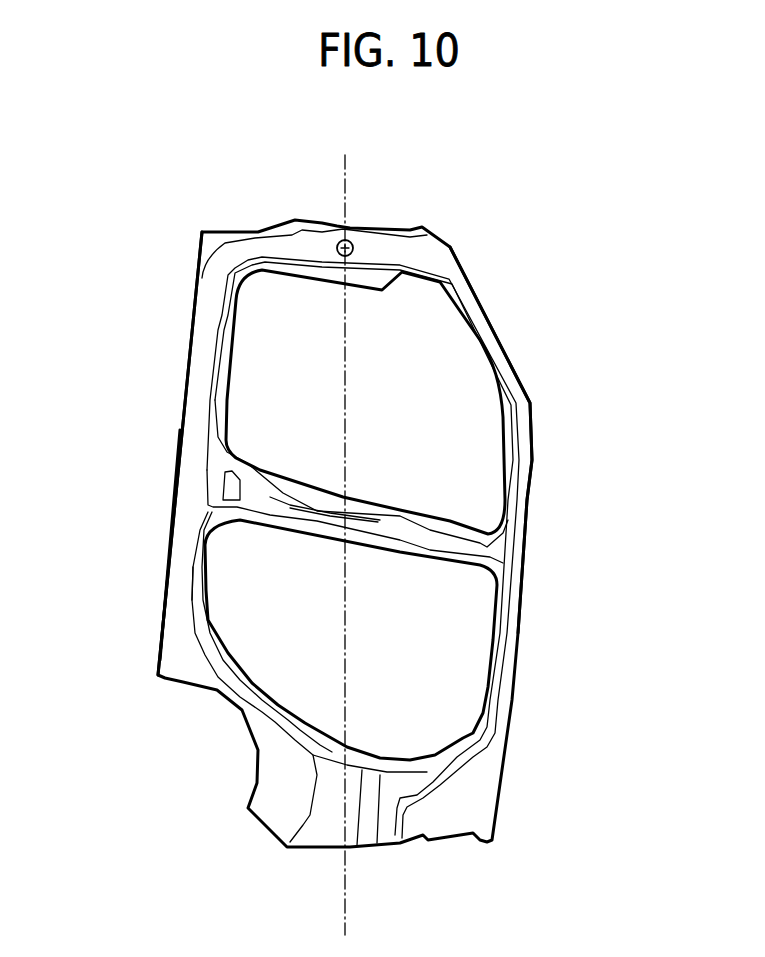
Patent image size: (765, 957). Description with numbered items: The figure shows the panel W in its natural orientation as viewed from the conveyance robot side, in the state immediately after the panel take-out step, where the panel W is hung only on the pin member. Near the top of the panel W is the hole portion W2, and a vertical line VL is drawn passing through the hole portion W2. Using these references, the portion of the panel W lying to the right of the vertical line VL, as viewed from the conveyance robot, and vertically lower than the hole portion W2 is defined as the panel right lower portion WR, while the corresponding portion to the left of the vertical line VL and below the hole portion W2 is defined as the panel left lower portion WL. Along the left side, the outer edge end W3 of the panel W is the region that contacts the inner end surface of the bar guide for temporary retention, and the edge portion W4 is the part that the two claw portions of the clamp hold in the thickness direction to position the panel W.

The panel W is at (450, 247).
The hole portion W2 is at (345, 240).
The outer edge end W3 is at (165, 578).
The edge portion W4 is at (180, 590).
The panel left lower portion WL is at (140, 552).
The panel right lower portion WR is at (548, 555).
The vertical line VL is at (348, 400).